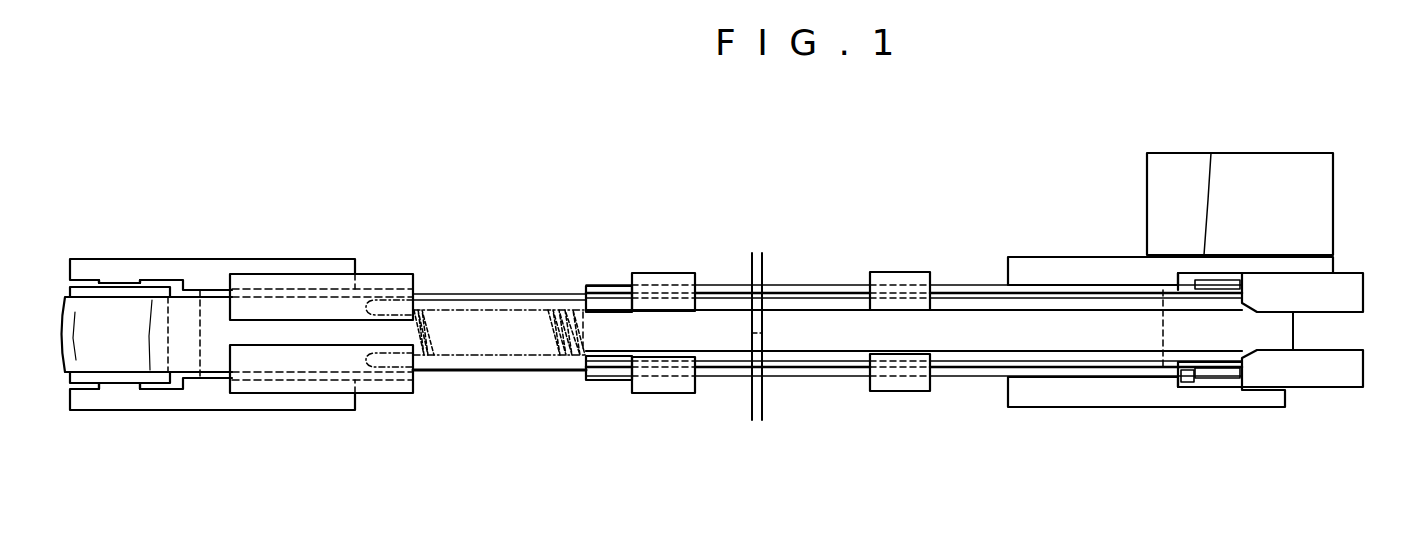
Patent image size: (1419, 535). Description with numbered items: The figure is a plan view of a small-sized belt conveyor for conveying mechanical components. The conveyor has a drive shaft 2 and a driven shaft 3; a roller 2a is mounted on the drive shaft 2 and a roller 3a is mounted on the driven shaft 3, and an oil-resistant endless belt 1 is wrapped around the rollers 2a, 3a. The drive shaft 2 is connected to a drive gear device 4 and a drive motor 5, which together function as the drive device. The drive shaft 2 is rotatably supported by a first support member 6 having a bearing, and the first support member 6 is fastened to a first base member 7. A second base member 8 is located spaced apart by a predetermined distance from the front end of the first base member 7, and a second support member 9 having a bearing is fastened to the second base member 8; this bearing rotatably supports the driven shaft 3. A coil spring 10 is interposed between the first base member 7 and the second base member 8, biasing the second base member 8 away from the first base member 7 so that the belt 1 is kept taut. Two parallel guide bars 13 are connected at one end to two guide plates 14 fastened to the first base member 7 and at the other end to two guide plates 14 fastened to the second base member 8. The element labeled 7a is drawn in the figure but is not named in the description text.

The endless belt 1 is at (212, 312).
The drive shaft 2 is at (1231, 385).
The roller 2a is at (1200, 375).
The driven shaft 3 is at (118, 388).
The roller 3a is at (84, 381).
The drive gear device 4 is at (1338, 231).
The drive motor 5 is at (1190, 171).
The first support member 6 is at (1072, 398).
The first base member 7 is at (828, 378).
The connecting member 7a is at (591, 381).
The second base member 8 is at (213, 378).
The second support member 9 is at (183, 262).
The coil spring 10 is at (557, 307).
The guide bars 13 is at (788, 308).
The guide plates 14 is at (400, 275).